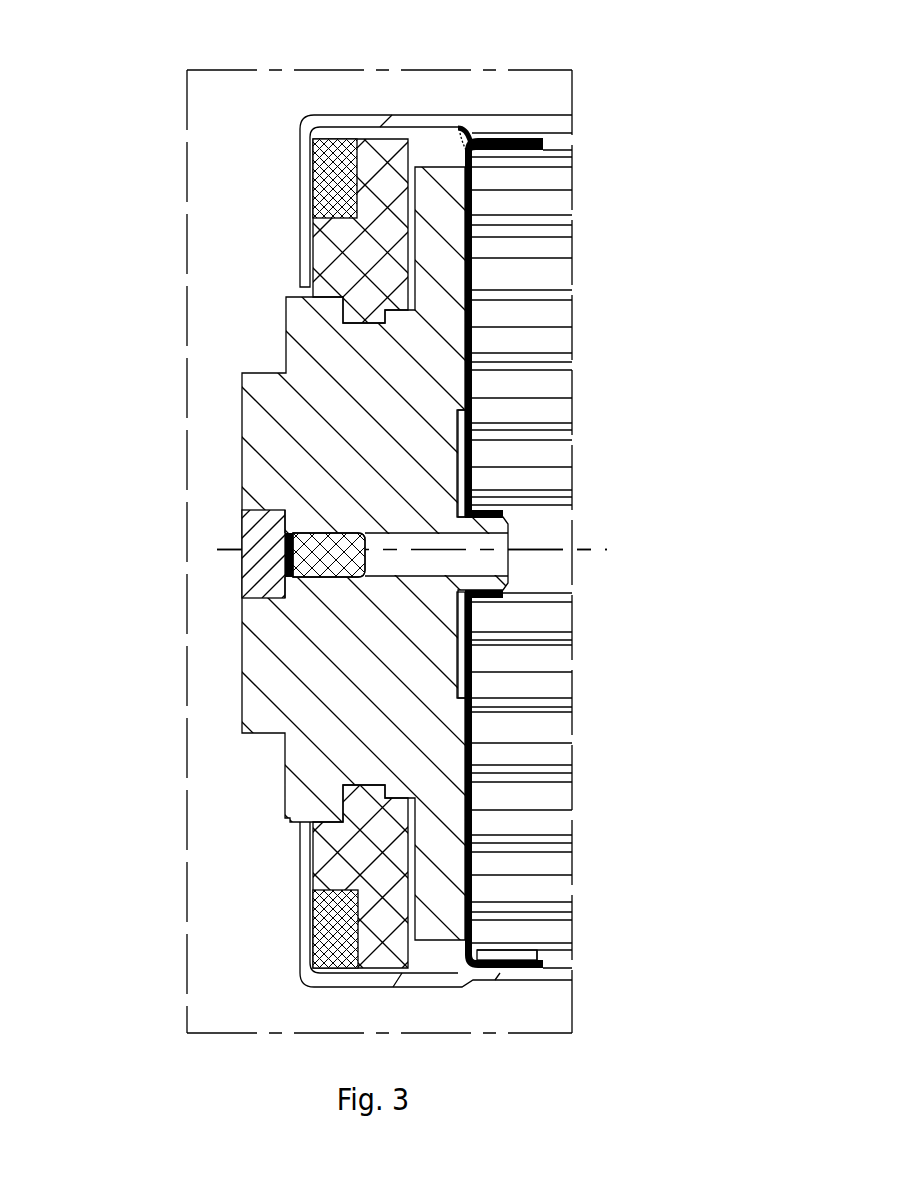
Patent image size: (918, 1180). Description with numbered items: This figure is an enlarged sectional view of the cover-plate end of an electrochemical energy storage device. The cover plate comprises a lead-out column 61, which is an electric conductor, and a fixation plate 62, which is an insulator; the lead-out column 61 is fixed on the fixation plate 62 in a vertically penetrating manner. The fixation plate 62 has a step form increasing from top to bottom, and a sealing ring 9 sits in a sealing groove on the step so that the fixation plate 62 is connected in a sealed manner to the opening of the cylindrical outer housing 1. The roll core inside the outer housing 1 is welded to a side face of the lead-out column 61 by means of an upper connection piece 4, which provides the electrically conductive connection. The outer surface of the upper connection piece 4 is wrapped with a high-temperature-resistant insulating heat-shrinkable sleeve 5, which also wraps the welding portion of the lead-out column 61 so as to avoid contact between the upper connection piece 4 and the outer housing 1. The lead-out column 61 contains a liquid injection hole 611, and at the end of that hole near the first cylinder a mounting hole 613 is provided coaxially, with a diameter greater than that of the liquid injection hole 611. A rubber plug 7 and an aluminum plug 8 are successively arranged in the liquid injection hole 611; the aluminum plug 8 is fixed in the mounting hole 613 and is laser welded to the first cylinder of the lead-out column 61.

The outer housing 1 is at (508, 122).
The upper connection piece 4 is at (474, 248).
The insulating heat-shrinkable sleeve 5 is at (468, 133).
The rubber plug 7 is at (327, 553).
The aluminum plug 8 is at (257, 530).
The sealing ring 9 is at (332, 204).
The lead-out column 61 is at (316, 342).
The fixation plate 62 is at (332, 250).
The liquid injection hole 611 is at (387, 562).
The mounting hole 613 is at (285, 509).